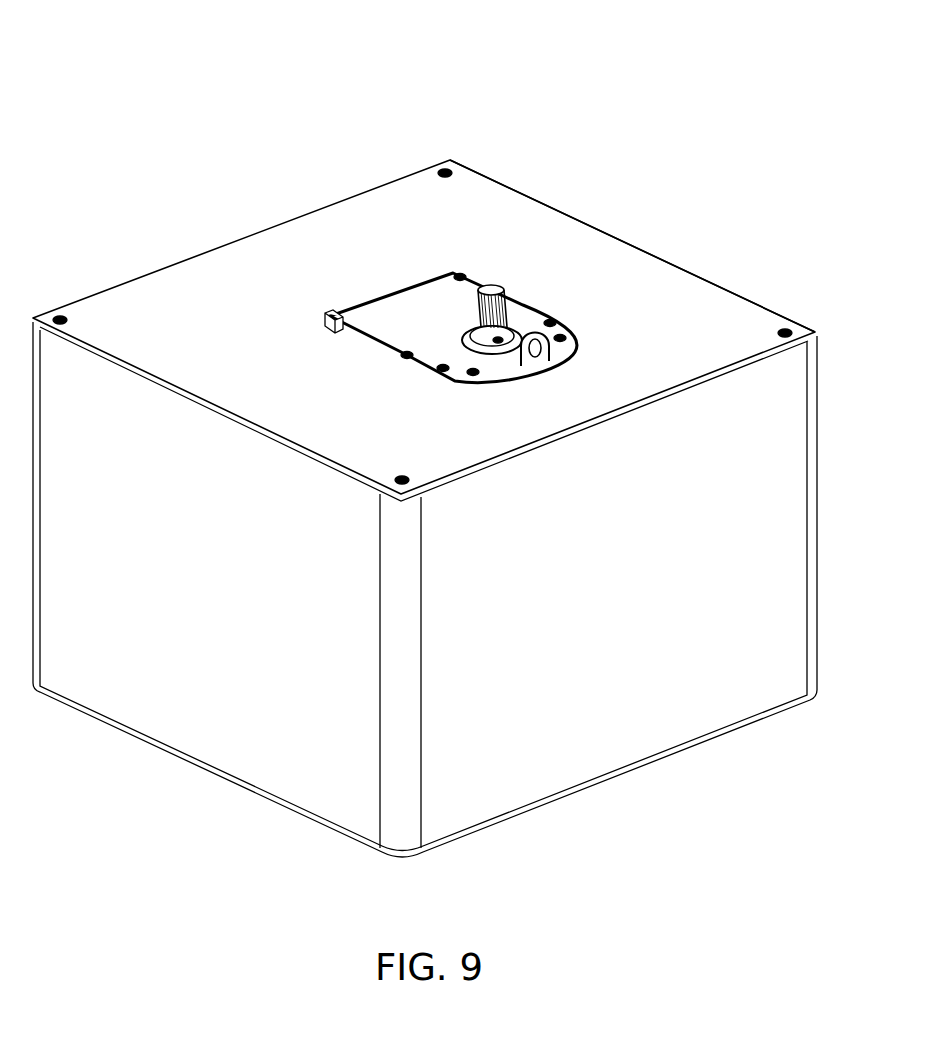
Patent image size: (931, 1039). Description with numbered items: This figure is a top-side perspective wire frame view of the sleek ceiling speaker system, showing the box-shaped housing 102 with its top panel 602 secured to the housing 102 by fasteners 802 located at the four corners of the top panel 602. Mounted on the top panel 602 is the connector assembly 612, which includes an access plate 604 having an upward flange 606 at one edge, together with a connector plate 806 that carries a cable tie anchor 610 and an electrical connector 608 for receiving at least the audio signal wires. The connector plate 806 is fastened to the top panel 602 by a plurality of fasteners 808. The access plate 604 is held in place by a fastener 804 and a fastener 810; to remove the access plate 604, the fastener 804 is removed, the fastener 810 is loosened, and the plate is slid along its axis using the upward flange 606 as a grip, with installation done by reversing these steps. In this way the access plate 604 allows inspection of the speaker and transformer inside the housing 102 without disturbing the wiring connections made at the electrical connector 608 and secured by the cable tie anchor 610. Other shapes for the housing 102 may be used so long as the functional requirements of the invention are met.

The housing 102 is at (207, 727).
The top panel 602 is at (424, 290).
The access plate 604 is at (430, 336).
The upward flange 606 is at (325, 322).
The electrical connector 608 is at (508, 292).
The cable tie anchor 610 is at (531, 356).
The connector assembly 612 is at (620, 219).
The fasteners 802 is at (445, 162).
The fastener 804 is at (400, 358).
The connector plate 806 is at (543, 322).
The fasteners 808 is at (468, 373).
The fastener 810 is at (458, 274).